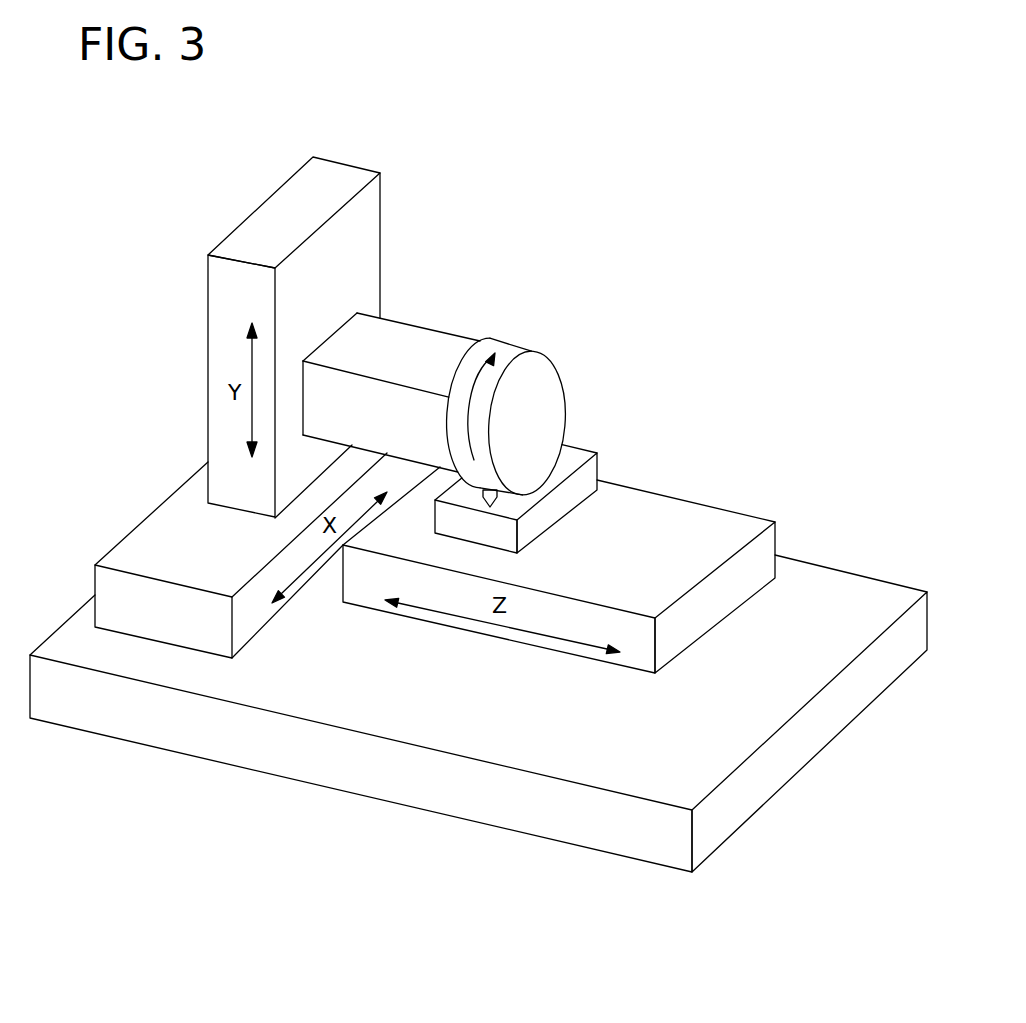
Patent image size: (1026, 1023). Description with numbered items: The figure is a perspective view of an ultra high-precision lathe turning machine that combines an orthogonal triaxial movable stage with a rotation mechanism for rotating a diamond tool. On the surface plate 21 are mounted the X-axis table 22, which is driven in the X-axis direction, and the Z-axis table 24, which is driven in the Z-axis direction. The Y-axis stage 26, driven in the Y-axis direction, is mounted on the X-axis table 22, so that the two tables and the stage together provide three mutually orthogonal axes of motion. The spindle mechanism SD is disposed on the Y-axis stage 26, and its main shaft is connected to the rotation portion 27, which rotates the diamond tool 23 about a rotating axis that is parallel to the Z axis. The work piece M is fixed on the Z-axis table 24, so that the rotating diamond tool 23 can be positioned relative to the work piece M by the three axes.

The surface plate 21 is at (375, 783).
The X-axis table 22 is at (103, 578).
The diamond tool 23 is at (500, 497).
The Z-axis table 24 is at (767, 543).
The Y-axis stage 26 is at (217, 303).
The rotation portion 27 is at (510, 348).
The spindle mechanism SD is at (428, 345).
The work piece M is at (580, 457).